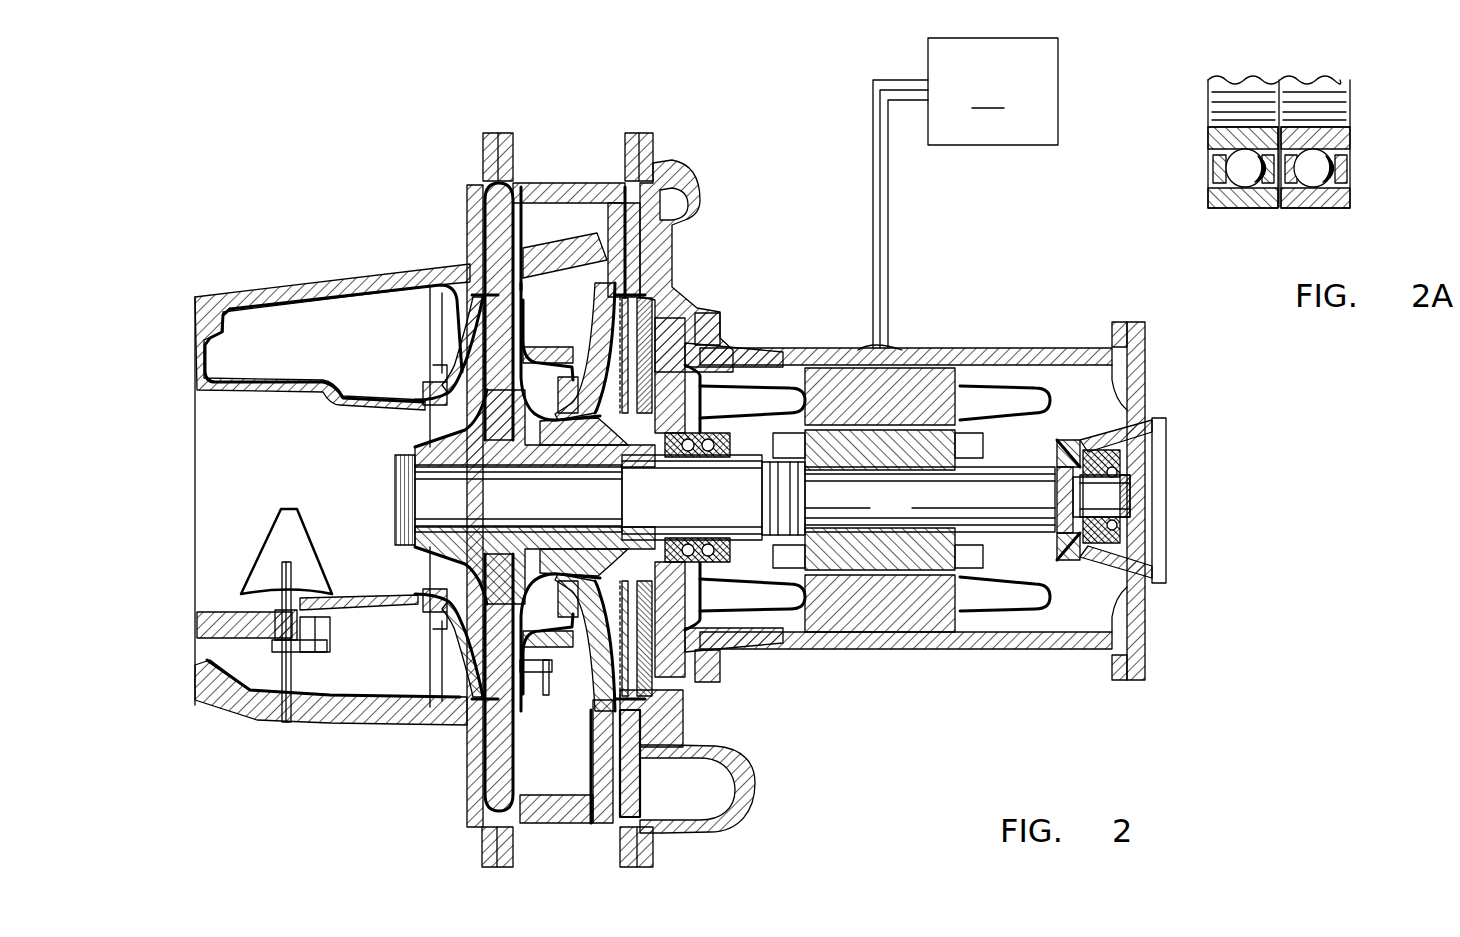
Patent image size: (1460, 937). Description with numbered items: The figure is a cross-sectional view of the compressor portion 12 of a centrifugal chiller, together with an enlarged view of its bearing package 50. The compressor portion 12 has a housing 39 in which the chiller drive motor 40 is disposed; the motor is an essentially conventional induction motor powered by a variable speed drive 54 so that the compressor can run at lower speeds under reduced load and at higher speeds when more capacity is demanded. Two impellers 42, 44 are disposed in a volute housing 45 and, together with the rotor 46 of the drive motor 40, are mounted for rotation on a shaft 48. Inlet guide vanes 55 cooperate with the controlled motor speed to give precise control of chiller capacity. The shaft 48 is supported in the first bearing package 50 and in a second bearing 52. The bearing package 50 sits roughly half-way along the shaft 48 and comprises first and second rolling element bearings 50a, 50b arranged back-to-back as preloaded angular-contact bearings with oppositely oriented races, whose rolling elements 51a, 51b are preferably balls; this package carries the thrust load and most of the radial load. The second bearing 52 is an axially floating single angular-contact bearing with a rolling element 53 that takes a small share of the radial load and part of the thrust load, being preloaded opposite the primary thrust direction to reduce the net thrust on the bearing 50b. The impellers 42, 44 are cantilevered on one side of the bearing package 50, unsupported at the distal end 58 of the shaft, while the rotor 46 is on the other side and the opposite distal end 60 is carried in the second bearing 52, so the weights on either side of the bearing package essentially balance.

In FIG. 2, the compressor portion 12 is at (965, 655).
In FIG. 2, the housing 39 is at (828, 345).
In FIG. 2, the drive motor 40 is at (922, 392).
In FIG. 2, the impeller 42 is at (480, 315).
In FIG. 2, the impeller 44 is at (640, 312).
In FIG. 2, the volute housing 45 is at (568, 195).
In FIG. 2, the rotor 46 is at (962, 355).
In FIG. 2, the shaft 48 is at (735, 497).
In FIG. 2, the bearing package 50 is at (757, 642).
In FIG. 2A, the bearing package 50 is at (1268, 78).
In FIG. 2A, the first rolling element bearing 50a is at (1210, 147).
In FIG. 2A, the second rolling element bearing 50b is at (1350, 147).
In FIG. 2A, the rolling element 51a is at (1242, 182).
In FIG. 2A, the rolling element 51b is at (1310, 182).
In FIG. 2, the second bearing 52 is at (1085, 537).
In FIG. 2, the rolling element 53 is at (1115, 468).
In FIG. 2, the variable speed drive 54 is at (958, 194).
In FIG. 2, the inlet guide vanes 55 is at (275, 538).
In FIG. 2, the distal end 58 is at (395, 492).
In FIG. 2, the distal end 60 is at (1110, 497).